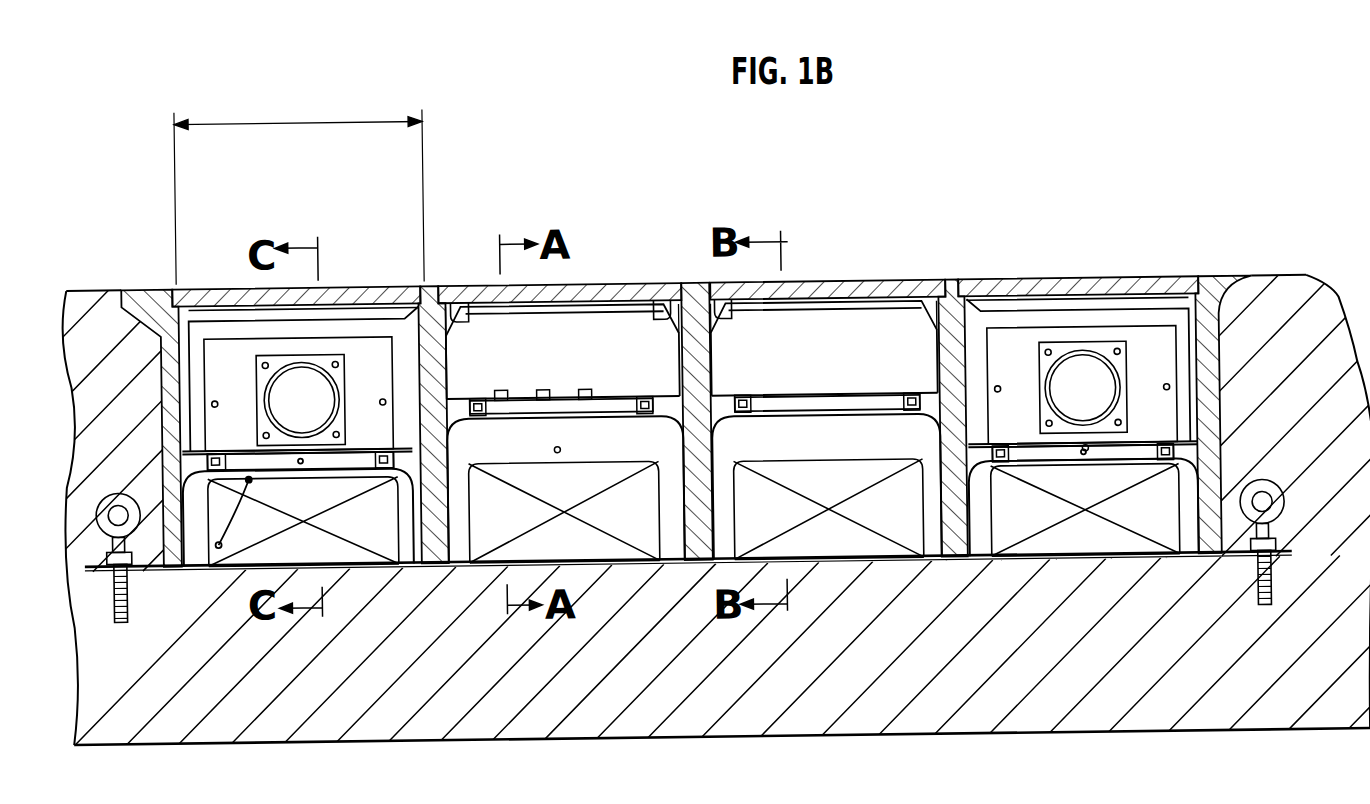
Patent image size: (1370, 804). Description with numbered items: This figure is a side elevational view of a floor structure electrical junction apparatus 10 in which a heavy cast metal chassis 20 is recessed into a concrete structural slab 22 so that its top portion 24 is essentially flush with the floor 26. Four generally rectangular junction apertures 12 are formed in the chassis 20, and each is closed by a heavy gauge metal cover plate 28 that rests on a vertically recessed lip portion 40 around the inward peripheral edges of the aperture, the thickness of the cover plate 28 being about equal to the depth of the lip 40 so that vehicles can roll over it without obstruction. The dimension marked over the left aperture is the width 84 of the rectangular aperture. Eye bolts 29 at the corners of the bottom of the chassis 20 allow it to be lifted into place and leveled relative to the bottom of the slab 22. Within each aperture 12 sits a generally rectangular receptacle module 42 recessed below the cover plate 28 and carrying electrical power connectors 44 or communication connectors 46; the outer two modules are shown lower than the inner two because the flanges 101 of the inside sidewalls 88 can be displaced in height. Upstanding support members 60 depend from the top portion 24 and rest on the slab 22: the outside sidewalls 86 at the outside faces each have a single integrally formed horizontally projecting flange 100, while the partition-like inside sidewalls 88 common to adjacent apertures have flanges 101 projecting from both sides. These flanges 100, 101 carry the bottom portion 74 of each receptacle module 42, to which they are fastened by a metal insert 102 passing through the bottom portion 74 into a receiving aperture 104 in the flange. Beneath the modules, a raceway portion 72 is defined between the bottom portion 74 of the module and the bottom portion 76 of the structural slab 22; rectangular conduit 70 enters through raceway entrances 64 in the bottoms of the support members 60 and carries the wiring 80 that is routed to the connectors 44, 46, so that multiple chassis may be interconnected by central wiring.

The floor structure electrical junction apparatus 10 is at (236, 788).
The junction aperture 12 is at (237, 226).
The chassis 20 is at (160, 545).
The concrete structural slab 22 is at (1282, 740).
The top portion 24 is at (343, 224).
The floor 26 is at (1282, 285).
The cover plate 28 is at (369, 284).
The eye bolt 29 is at (1284, 500).
The recessed lip portion 40 is at (660, 298).
The receptacle module 42 is at (236, 347).
The electrical power connector 44 is at (320, 397).
The communication connector 46 is at (575, 386).
The support member 60 is at (205, 560).
The raceway entrance 64 is at (408, 563).
The rectangular conduit 70 is at (327, 500).
The raceway portion 72 is at (343, 560).
The bottom portion 74 is at (350, 455).
The bottom portion 76 is at (492, 574).
The wiring 80 is at (241, 567).
The width 84 is at (299, 116).
The outside sidewall 86 is at (138, 286).
The inside sidewall 88 is at (464, 284).
The flange 100 is at (190, 423).
The flange 101 is at (478, 414).
The metal insert 102 is at (742, 397).
The receiving aperture 104 is at (738, 414).